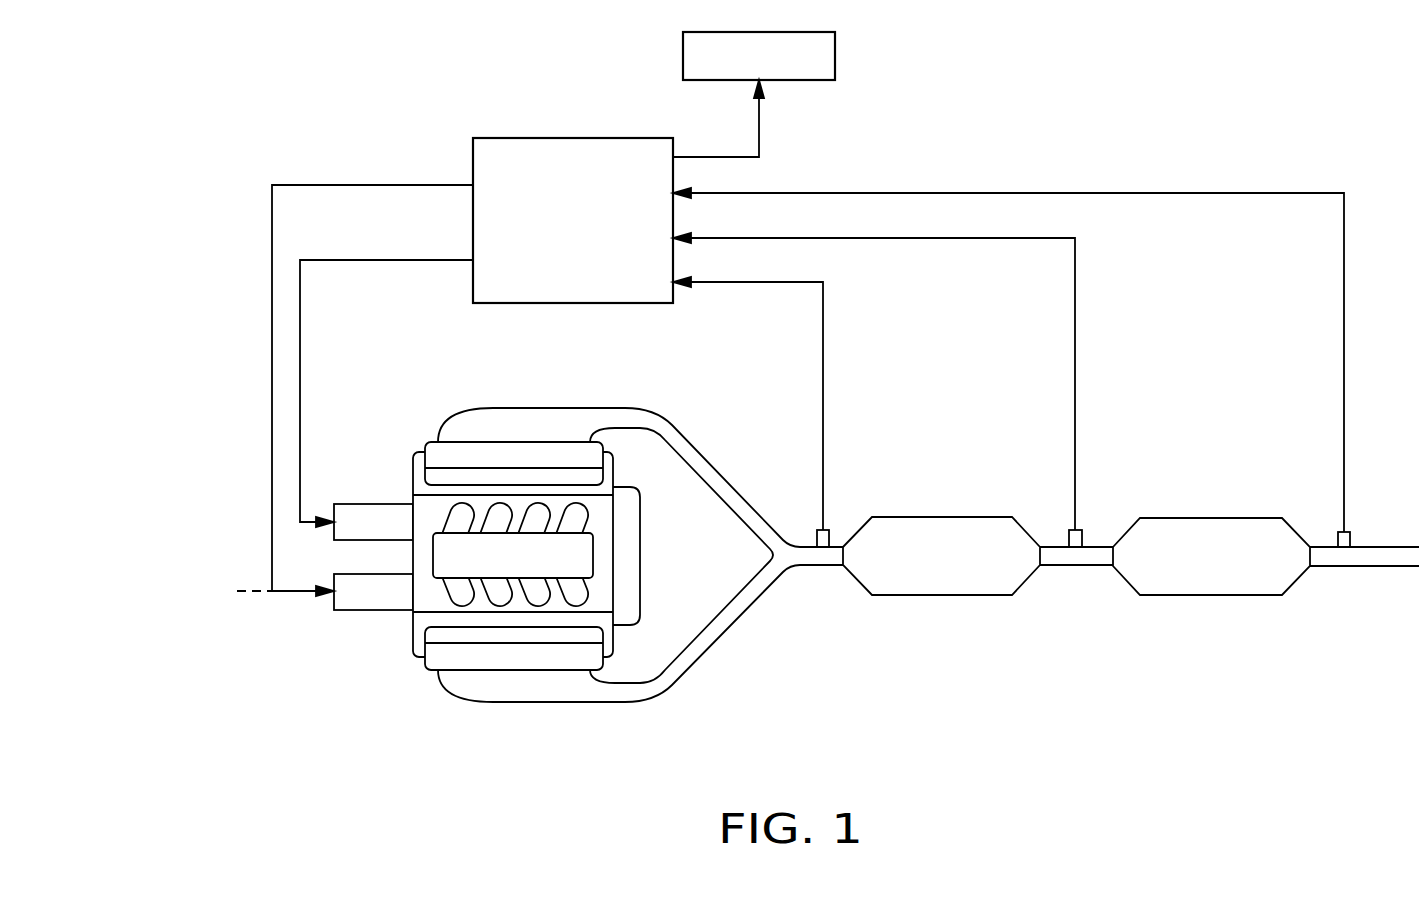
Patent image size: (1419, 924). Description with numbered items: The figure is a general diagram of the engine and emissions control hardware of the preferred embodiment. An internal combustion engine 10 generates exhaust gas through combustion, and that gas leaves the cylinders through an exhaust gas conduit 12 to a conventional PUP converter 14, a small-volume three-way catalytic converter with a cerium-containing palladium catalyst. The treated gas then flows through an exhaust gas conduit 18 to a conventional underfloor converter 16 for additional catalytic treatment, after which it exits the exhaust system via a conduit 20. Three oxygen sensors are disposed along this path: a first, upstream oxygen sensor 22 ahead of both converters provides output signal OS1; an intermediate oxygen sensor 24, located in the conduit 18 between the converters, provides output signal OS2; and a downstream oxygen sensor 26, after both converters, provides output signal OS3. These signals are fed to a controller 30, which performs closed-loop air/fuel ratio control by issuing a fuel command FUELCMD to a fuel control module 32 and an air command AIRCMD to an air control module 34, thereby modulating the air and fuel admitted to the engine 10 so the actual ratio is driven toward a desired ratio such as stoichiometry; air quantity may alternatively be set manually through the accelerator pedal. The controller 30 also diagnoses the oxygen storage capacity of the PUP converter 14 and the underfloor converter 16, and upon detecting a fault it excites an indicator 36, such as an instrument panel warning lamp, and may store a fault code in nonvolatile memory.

The internal combustion engine 10 is at (418, 457).
The exhaust gas conduit 12 is at (607, 420).
The PUP converter 14 is at (928, 595).
The underfloor converter 16 is at (1220, 585).
The exhaust gas conduit 18 is at (1058, 558).
The conduit 20 is at (1382, 562).
The first oxygen sensor 22 is at (817, 532).
The intermediate oxygen sensor 24 is at (1069, 532).
The downstream oxygen sensor 26 is at (1338, 533).
The controller 30 is at (537, 160).
The fuel control module 32 is at (363, 504).
The air control module 34 is at (343, 600).
The indicator 36 is at (834, 53).